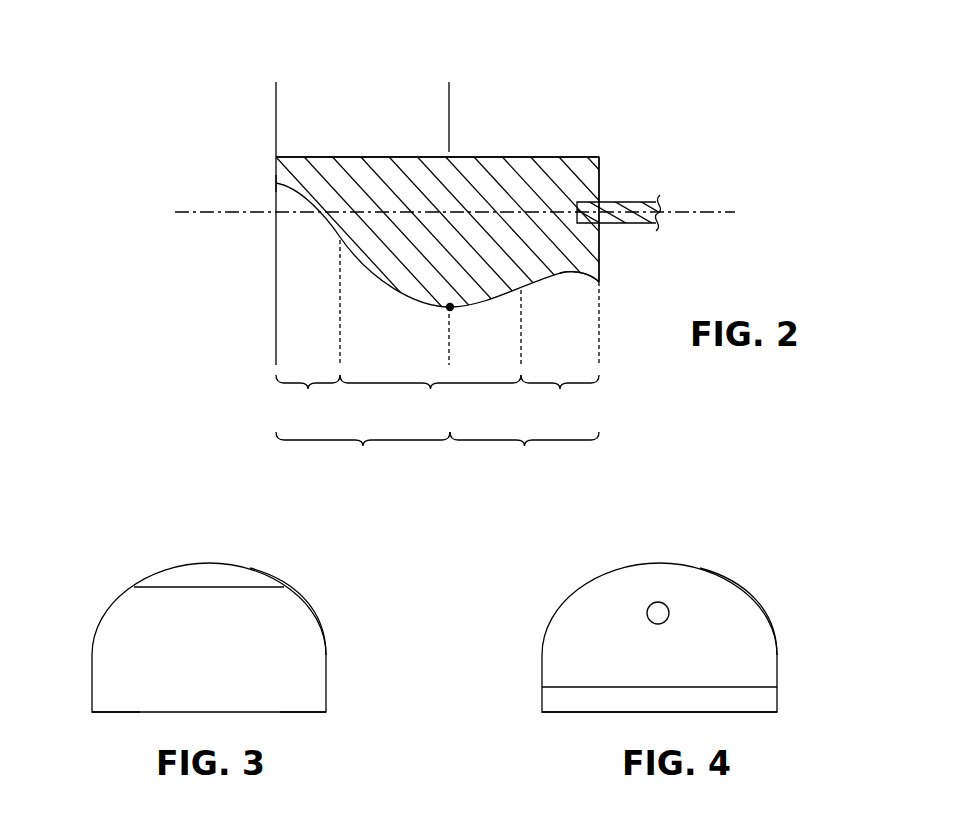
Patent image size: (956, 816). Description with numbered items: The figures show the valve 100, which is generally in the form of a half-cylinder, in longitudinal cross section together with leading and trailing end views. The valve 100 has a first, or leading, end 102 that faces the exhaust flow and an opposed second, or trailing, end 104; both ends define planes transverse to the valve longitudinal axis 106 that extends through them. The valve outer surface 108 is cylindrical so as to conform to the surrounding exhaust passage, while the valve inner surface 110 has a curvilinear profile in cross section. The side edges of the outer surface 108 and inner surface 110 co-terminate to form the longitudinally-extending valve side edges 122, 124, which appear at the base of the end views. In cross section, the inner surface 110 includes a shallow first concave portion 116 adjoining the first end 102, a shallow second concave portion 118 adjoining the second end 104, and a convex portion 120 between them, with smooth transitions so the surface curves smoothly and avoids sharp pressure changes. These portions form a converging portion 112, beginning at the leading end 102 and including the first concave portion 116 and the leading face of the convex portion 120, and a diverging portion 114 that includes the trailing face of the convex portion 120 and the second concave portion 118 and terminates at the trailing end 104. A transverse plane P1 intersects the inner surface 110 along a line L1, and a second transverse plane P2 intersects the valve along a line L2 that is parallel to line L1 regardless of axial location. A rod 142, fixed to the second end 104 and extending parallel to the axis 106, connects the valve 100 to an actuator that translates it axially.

In FIG. 2, the valve 100 is at (248, 128).
In FIG. 3, the valve 100 is at (115, 588).
In FIG. 4, the valve 100 is at (558, 600).
In FIG. 2, the first end 102 is at (275, 167).
In FIG. 3, the first end 102 is at (218, 572).
In FIG. 2, the second end 104 is at (600, 168).
In FIG. 4, the second end 104 is at (740, 630).
In FIG. 2, the valve longitudinal axis 106 is at (218, 214).
In FIG. 2, the valve outer surface 108 is at (544, 157).
In FIG. 3, the valve outer surface 108 is at (312, 626).
In FIG. 2, the valve inner surface 110 is at (578, 280).
In FIG. 2, the converging portion 112 is at (363, 454).
In FIG. 2, the diverging portion 114 is at (524, 454).
In FIG. 2, the first concave portion 116 is at (308, 394).
In FIG. 2, the second concave portion 118 is at (560, 393).
In FIG. 2, the convex portion 120 is at (430, 396).
In FIG. 3, the valve side edge 122 is at (92, 712).
In FIG. 4, the valve side edge 122 is at (777, 712).
In FIG. 3, the valve side edge 124 is at (326, 712).
In FIG. 4, the valve side edge 124 is at (542, 712).
In FIG. 2, the rod 142 is at (653, 200).
In FIG. 4, the rod 142 is at (662, 608).
In FIG. 2, the line L1 is at (275, 183).
In FIG. 2, the line L2 is at (450, 310).
In FIG. 2, the plane P1 is at (276, 103).
In FIG. 2, the plane P2 is at (449, 101).